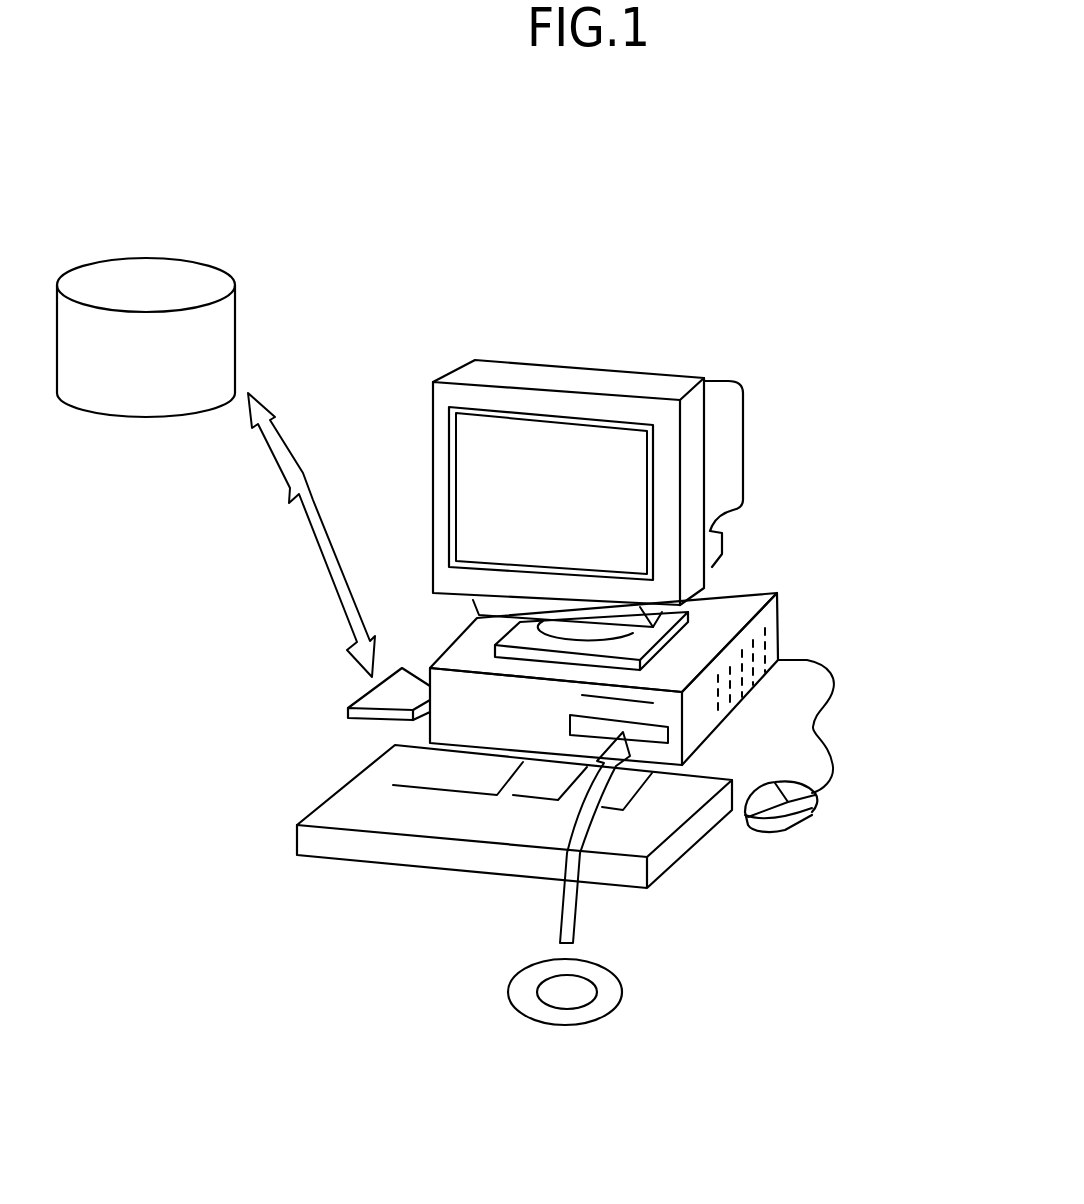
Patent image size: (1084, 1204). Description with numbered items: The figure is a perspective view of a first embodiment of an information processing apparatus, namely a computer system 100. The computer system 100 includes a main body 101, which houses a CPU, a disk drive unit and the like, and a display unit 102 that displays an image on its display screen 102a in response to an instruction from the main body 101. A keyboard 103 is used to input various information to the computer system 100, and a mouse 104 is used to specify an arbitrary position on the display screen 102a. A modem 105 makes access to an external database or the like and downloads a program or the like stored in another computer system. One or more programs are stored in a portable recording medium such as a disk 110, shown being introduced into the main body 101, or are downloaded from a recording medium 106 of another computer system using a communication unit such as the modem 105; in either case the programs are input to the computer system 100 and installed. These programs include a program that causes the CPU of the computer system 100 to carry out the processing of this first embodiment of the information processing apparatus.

The computer system 100 is at (724, 293).
The main body 101 is at (771, 592).
The display unit 102 is at (690, 373).
The display screen 102a is at (508, 438).
The keyboard 103 is at (348, 793).
The mouse 104 is at (782, 818).
The modem 105 is at (366, 694).
The recording medium 106 is at (214, 263).
The disk 110 is at (623, 992).